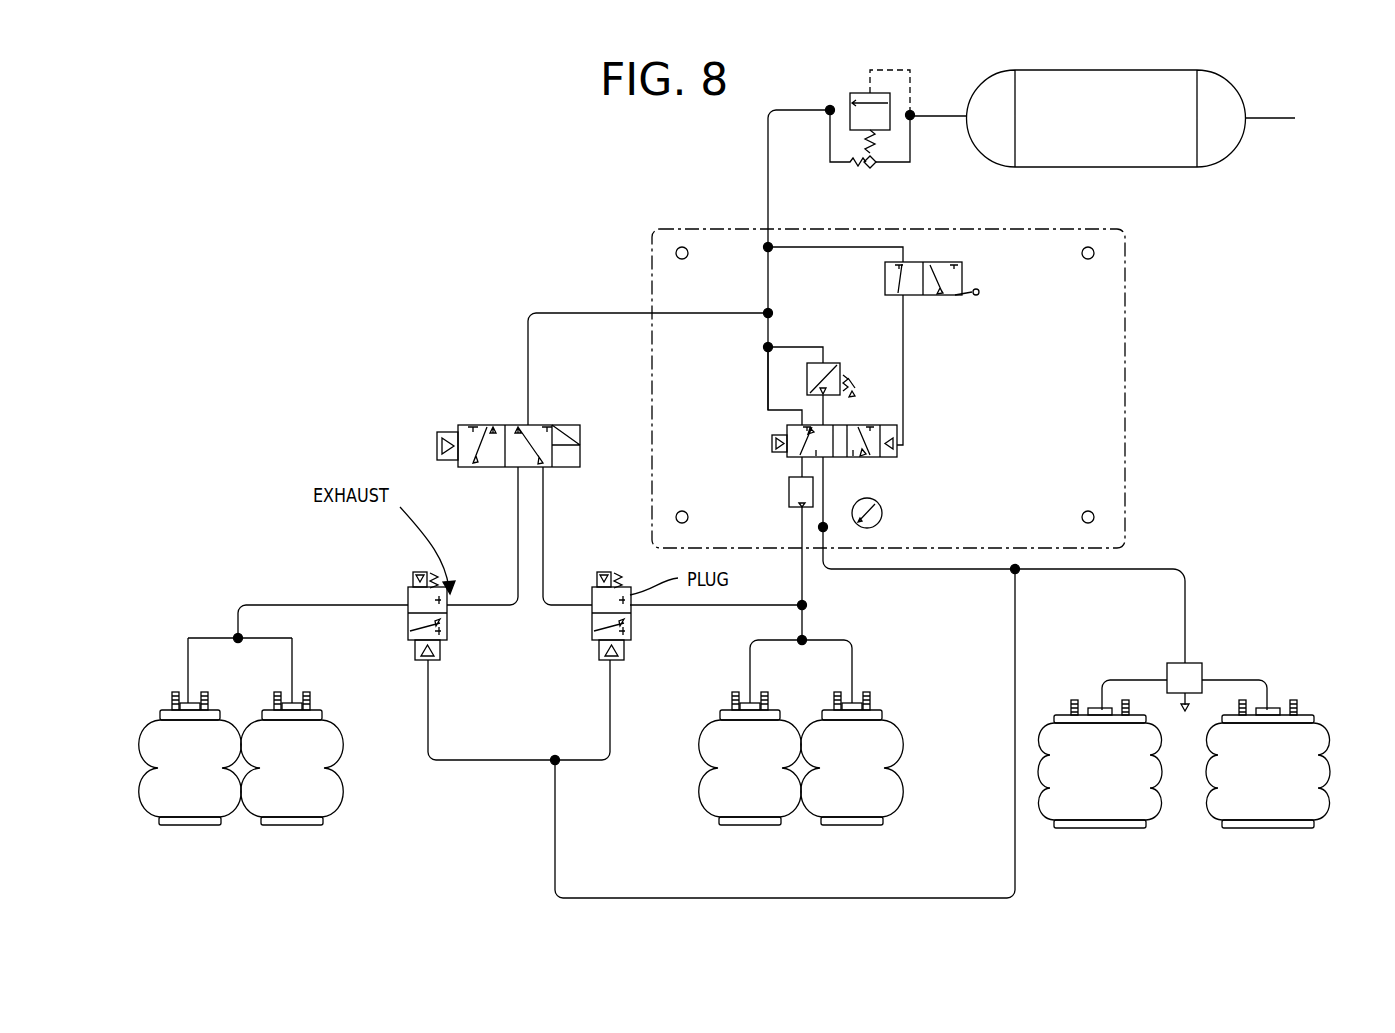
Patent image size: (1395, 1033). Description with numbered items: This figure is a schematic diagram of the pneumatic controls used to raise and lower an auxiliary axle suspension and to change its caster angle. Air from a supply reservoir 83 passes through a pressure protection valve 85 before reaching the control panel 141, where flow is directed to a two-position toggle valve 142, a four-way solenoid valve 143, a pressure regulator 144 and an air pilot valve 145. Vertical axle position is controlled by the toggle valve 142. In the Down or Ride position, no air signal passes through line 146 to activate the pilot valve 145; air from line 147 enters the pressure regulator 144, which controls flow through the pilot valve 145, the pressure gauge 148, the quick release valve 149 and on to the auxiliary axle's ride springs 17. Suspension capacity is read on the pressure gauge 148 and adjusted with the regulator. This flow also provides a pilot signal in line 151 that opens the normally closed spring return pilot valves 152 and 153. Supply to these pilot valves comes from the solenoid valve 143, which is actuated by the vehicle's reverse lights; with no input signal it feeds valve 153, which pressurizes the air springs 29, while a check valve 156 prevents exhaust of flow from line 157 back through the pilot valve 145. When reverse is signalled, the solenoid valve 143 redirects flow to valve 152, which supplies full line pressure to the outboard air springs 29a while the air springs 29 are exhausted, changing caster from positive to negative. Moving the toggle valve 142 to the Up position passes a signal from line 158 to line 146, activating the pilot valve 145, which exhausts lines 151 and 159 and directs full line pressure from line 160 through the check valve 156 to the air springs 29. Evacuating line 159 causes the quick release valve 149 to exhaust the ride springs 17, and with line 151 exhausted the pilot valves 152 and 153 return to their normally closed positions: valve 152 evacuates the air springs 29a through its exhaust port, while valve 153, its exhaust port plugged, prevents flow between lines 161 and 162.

The ride springs 17 is at (1102, 795).
The air springs 29 is at (732, 788).
The outboard mounted air springs 29a is at (180, 748).
The supply reservoir 83 is at (1127, 147).
The pressure protection valve 85 is at (917, 141).
The control panel 141 is at (1125, 400).
The two-position toggle valve 142 is at (950, 296).
The 4-way solenoid valve 143 is at (547, 425).
The pressure regulator 144 is at (837, 363).
The air pilot valve 145 is at (897, 455).
The line 146 is at (903, 360).
The line 147 is at (796, 346).
The pressure gauge 148 is at (882, 508).
The quick release valve 149 is at (1203, 668).
The line 151 is at (1015, 635).
The normally closed spring return pilot valve 152 is at (447, 617).
The normally closed spring return pilot valve 153 is at (592, 612).
The check valve 156 is at (789, 490).
The line 157 is at (803, 580).
The line 158 is at (823, 245).
The line 159 is at (1135, 568).
The line 160 is at (768, 377).
The line 161 is at (543, 527).
The line 162 is at (713, 607).